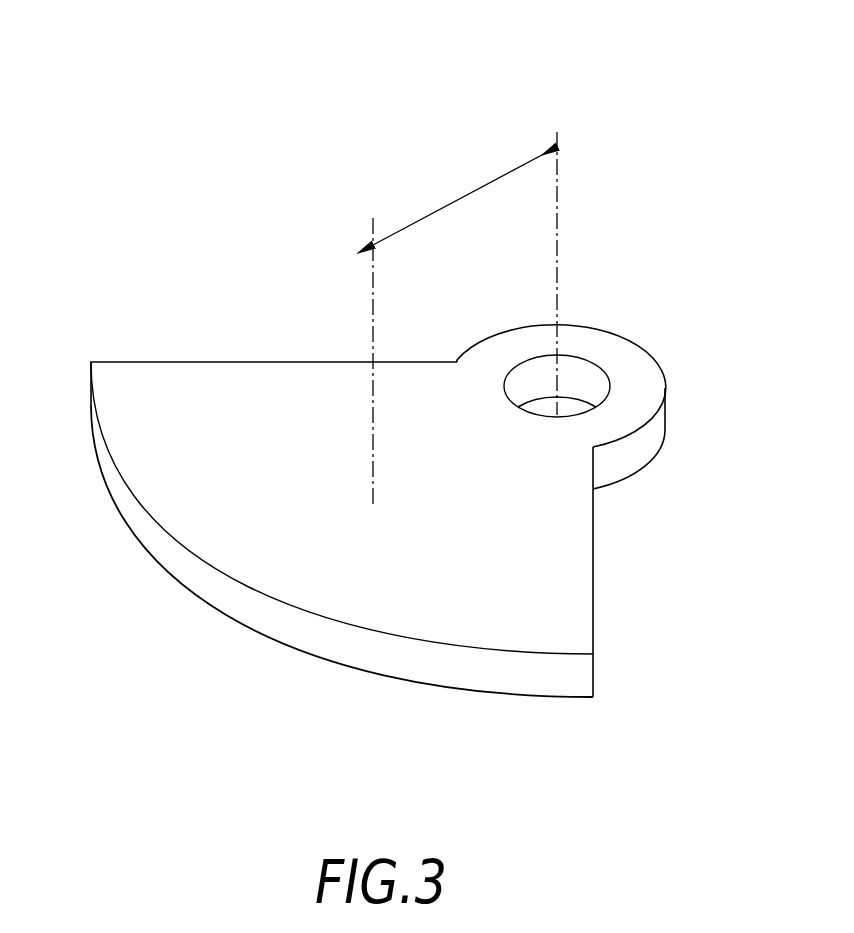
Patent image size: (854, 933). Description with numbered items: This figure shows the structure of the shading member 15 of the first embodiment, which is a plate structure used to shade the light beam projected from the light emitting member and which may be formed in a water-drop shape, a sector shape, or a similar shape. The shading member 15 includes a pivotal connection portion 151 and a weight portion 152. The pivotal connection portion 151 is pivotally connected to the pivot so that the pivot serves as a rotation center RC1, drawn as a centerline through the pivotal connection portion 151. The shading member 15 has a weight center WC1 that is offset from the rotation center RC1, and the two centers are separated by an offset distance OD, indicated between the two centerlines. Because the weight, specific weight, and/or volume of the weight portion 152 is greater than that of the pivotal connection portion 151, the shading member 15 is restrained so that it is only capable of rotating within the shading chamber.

The shading member 15 is at (396, 354).
The pivotal connection portion 151 is at (635, 372).
The weight portion 152 is at (160, 377).
The weight center WC1 is at (373, 342).
The rotation center RC1 is at (558, 302).
The offset distance OD is at (465, 196).